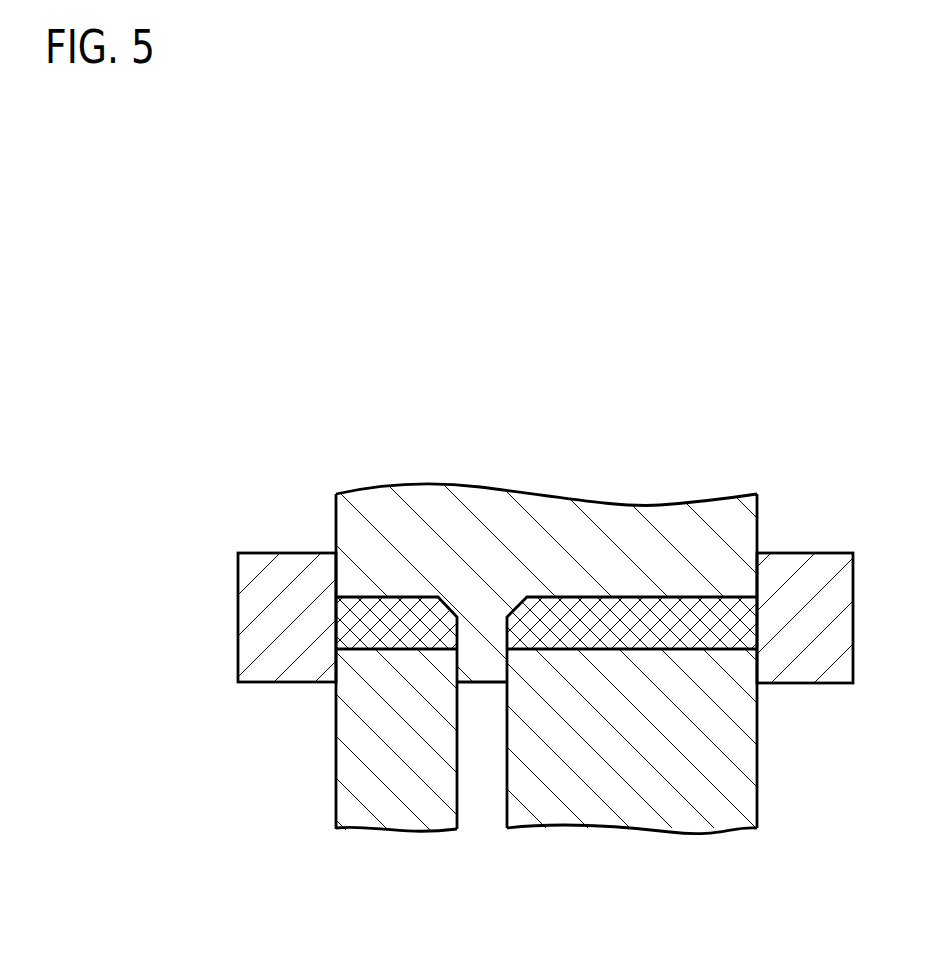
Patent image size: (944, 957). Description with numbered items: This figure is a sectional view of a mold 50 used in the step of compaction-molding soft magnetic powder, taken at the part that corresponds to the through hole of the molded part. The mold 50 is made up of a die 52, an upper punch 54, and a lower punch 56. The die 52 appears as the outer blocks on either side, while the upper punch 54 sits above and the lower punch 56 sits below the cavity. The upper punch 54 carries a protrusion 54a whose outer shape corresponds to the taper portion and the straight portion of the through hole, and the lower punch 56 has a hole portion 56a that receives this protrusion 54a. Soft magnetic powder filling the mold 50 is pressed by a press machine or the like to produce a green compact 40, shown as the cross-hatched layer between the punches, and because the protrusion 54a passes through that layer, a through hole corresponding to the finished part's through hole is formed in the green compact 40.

The mold 50 is at (699, 411).
The die 52 is at (238, 615).
The upper punch 54 is at (487, 507).
The lower punch 56 is at (747, 785).
The green compact 40 is at (370, 642).
The protrusion 54a is at (477, 655).
The hole portion 56a is at (507, 767).